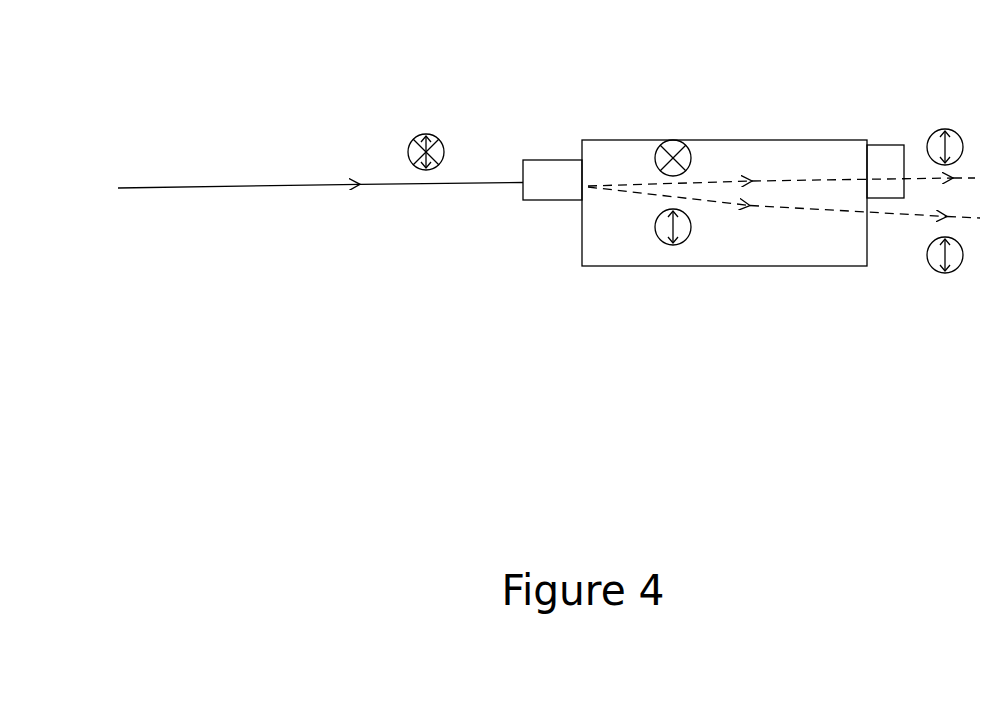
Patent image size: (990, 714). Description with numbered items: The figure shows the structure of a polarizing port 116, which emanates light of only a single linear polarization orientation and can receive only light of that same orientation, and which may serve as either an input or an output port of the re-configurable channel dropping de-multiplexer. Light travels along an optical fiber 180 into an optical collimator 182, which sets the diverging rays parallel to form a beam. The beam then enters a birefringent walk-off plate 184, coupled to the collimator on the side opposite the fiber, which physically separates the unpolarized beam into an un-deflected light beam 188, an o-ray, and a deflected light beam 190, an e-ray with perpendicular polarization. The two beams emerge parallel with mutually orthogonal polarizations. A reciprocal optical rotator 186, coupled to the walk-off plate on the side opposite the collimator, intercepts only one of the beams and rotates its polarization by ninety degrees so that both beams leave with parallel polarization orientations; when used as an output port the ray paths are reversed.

The polarizing port 116 is at (287, 28).
The optical fiber 180 is at (223, 184).
The optical collimator 182 is at (527, 158).
The birefringent walk-off plate 184 is at (697, 140).
The reciprocal optical rotator 186 is at (880, 145).
The un-deflected light beam 188 is at (775, 180).
The deflected light beam 190 is at (788, 212).